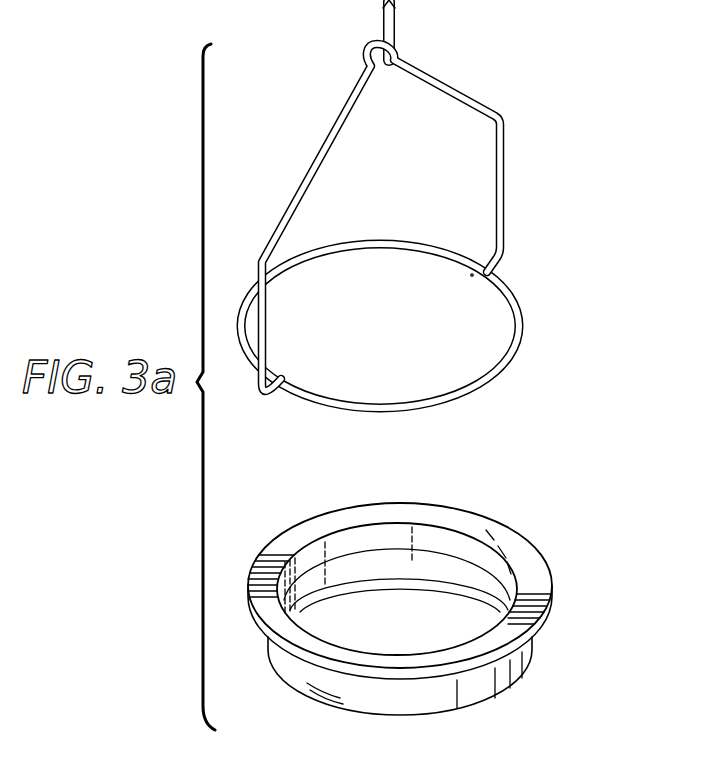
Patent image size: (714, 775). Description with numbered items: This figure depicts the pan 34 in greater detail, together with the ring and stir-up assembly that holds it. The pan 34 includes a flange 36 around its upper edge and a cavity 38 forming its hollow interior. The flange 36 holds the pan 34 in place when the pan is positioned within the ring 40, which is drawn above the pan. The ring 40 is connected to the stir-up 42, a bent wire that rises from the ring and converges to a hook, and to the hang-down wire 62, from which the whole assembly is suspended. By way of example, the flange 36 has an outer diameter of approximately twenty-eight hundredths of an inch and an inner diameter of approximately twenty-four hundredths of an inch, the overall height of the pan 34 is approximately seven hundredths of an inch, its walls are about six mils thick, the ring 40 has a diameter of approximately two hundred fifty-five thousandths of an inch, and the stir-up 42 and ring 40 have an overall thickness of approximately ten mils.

The pan 34 is at (430, 575).
The flange 36 is at (532, 563).
The cavity 38 is at (349, 610).
The ring 40 is at (522, 318).
The stir-up 42 is at (505, 173).
The hang-down wire 62 is at (396, 28).